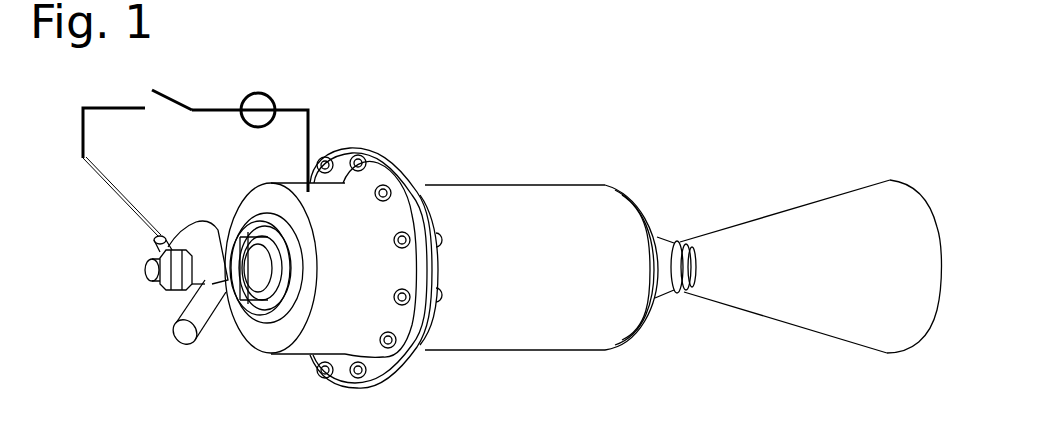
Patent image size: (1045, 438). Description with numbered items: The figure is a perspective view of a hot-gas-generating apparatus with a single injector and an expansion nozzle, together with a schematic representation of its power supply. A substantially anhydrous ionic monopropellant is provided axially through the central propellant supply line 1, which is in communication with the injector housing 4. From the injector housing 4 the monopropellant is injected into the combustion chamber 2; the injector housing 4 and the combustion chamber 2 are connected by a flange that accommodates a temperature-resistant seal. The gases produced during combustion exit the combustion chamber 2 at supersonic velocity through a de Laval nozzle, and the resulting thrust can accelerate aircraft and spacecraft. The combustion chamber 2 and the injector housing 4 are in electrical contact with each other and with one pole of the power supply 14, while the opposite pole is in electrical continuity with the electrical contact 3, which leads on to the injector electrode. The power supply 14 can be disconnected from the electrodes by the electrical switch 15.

The propellant supply line 1 is at (182, 330).
The combustion chamber 2 is at (520, 285).
The electrical contact 3 is at (163, 238).
The injector housing 4 is at (337, 235).
The power supply 14 is at (265, 107).
The electrical switch 15 is at (167, 108).